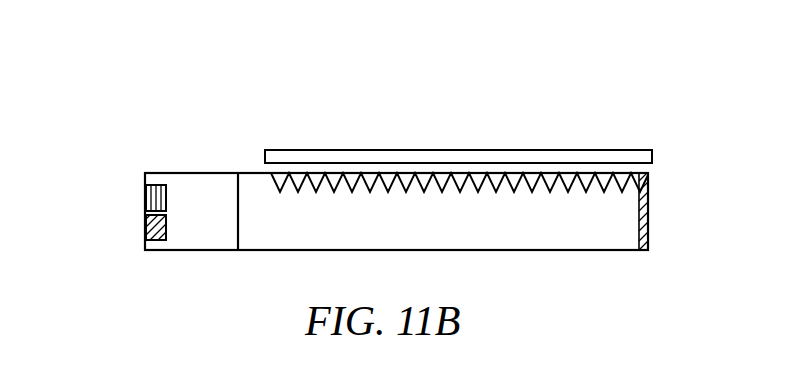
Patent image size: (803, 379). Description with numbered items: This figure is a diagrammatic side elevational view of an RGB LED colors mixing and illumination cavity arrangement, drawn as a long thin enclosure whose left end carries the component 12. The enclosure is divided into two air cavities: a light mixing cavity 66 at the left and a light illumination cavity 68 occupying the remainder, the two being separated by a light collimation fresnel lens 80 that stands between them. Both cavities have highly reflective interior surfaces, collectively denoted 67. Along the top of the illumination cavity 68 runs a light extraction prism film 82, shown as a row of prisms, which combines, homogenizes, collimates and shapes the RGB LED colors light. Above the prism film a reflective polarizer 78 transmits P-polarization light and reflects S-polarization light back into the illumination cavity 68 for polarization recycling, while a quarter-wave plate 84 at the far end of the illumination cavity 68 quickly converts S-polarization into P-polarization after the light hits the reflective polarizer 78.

The electronic device 12 is at (146, 205).
The light mixing cavity 66 is at (205, 185).
The highly reflective interior surfaces 67 is at (540, 252).
The light illumination cavity 68 is at (304, 239).
The reflective polarizer 78 is at (508, 150).
The light collimation fresnel lens 80 is at (238, 231).
The light extraction prism film 82 is at (407, 181).
The quarter-wave plate 84 is at (648, 218).